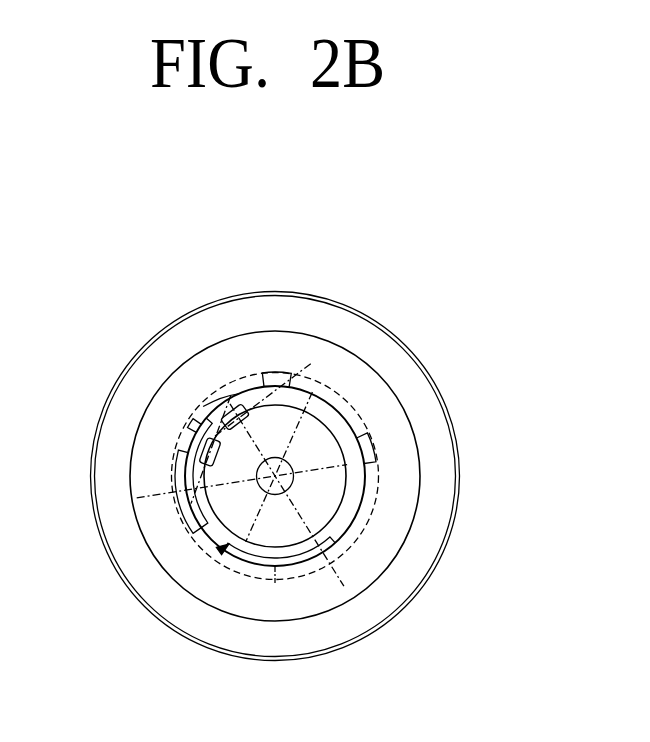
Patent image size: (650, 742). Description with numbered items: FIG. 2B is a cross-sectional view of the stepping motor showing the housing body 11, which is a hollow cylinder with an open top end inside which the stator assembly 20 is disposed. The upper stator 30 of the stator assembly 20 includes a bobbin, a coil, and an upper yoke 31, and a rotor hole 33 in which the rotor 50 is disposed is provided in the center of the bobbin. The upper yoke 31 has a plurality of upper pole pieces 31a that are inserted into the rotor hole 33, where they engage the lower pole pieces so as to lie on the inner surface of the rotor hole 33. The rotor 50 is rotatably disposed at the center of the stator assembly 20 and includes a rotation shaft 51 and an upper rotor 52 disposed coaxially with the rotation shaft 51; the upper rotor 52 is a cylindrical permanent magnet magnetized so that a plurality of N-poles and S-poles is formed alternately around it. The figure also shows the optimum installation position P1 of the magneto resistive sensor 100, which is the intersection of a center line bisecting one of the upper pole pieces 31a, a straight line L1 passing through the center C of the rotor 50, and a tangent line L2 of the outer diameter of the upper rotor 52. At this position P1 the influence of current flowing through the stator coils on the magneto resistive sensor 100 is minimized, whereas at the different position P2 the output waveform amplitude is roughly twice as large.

The housing body 11 is at (433, 372).
The stator assembly 20 is at (350, 540).
The upper stator 30 is at (420, 405).
The upper yoke 31 is at (404, 545).
The upper pole pieces 31a is at (192, 420).
The rotor hole 33 is at (366, 444).
The rotor 50 is at (216, 552).
The rotation shaft 51 is at (300, 404).
The upper rotor 52 is at (210, 540).
The magneto resistive sensor 100 is at (238, 408).
The straight line L1 is at (228, 400).
The tangent line L2 is at (313, 362).
The optimum installation position P1 is at (172, 420).
The different position P2 is at (128, 505).
The center of the rotor C is at (275, 477).